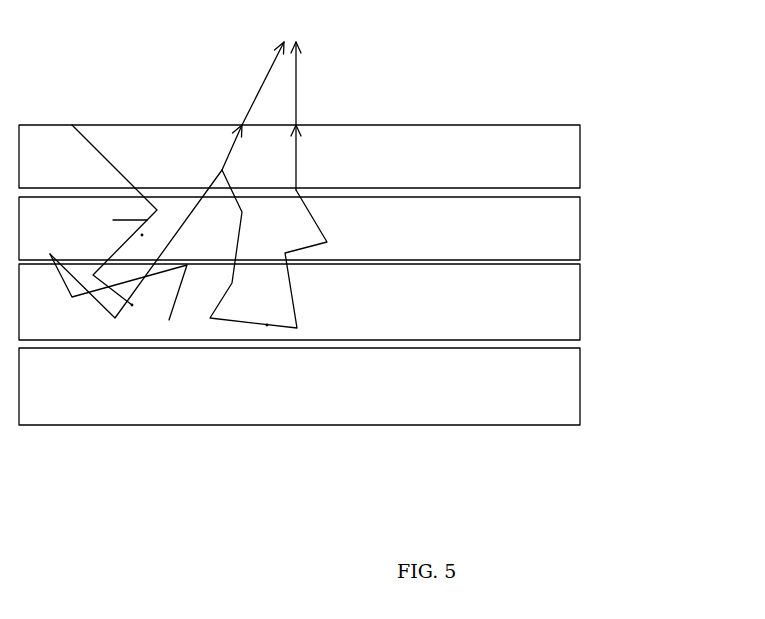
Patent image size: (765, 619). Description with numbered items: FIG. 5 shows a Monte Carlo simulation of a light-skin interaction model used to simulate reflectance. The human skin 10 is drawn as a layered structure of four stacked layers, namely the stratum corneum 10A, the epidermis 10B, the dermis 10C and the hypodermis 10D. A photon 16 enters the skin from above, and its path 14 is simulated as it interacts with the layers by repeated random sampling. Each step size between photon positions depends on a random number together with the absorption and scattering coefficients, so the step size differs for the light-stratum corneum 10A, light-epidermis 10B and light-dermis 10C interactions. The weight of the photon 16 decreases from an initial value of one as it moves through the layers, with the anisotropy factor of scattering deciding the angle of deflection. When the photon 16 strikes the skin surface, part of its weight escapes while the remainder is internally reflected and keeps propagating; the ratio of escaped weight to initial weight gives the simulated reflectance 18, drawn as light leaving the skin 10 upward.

The human skin 10 is at (672, 128).
The stratum corneum 10A is at (334, 156).
The epidermis 10B is at (334, 228).
The dermis 10C is at (334, 302).
The hypodermis 10D is at (335, 386).
The path 14 is at (142, 235).
The photon 16 is at (72, 125).
The simulated reflectance 18 is at (261, 100).